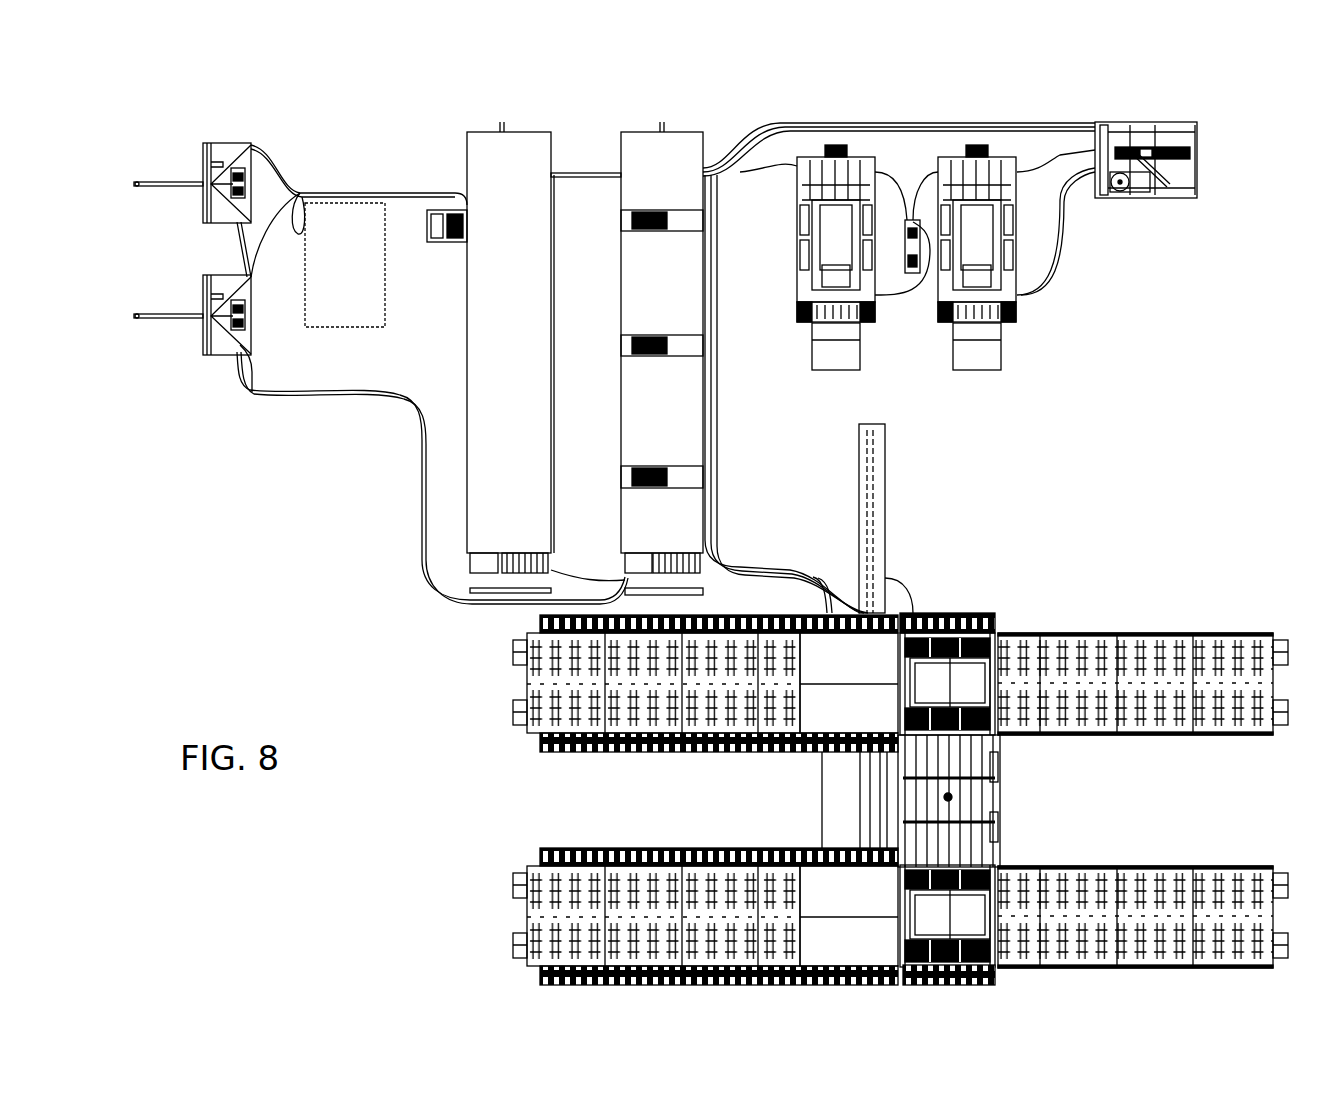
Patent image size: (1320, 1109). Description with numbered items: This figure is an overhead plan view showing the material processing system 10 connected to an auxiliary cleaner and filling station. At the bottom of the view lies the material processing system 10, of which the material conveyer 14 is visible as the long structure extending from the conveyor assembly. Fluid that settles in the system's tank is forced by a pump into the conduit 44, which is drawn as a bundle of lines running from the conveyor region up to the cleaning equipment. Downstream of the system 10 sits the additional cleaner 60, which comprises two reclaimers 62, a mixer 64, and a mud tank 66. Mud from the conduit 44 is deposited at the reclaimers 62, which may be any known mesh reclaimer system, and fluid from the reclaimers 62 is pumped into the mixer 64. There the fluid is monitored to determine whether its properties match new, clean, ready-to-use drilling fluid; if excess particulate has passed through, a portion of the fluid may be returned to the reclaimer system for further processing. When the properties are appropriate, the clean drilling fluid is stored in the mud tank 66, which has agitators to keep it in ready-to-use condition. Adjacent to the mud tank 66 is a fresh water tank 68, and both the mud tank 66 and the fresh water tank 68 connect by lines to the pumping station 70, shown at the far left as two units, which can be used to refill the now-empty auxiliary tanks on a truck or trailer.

The material processing system 10 is at (1167, 584).
The material conveyer 14 is at (880, 519).
The conduit 44 is at (752, 567).
The cleaner 60 is at (1155, 367).
The reclaimer 62 is at (875, 325).
The mixer 64 is at (1195, 122).
The mud tank 66 is at (680, 155).
The fresh water tank 68 is at (492, 160).
The pumping station 70 is at (184, 119).